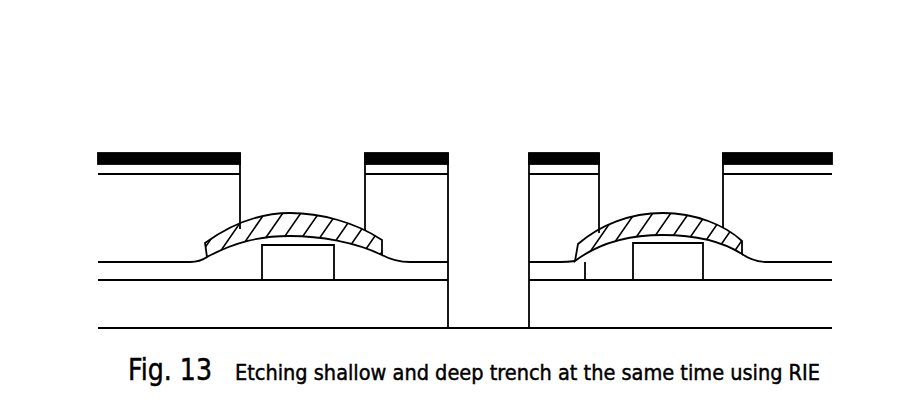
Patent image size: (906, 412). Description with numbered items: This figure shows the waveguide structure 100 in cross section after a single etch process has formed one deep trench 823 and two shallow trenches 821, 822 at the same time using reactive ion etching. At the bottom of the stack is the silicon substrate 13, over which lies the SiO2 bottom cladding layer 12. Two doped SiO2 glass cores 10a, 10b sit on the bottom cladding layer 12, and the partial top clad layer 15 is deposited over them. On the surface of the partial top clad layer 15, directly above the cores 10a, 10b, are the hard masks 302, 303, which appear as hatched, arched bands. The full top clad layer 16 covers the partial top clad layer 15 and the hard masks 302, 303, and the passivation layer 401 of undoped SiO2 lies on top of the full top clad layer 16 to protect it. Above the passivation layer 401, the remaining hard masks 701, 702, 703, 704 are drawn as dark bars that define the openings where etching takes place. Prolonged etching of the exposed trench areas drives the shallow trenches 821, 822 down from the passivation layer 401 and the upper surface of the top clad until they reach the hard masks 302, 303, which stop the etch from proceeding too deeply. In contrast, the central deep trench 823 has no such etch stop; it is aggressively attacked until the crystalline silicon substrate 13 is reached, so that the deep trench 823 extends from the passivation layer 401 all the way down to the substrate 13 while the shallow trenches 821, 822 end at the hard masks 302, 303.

The waveguide structure 100 is at (413, 78).
The silicon substrate 13 is at (100, 343).
The bottom cladding layer 12 is at (96, 306).
The partial top clad layer 15 is at (96, 270).
The full top clad layer 16 is at (96, 220).
The passivation layer 401 is at (101, 170).
The hard mask 701 is at (97, 153).
The hard mask 702 is at (411, 152).
The hard mask 703 is at (570, 152).
The hard mask 704 is at (770, 152).
The doped SiO2 glass core 10a is at (262, 268).
The doped SiO2 glass core 10b is at (633, 268).
The hard mask 302 is at (218, 235).
The hard mask 303 is at (585, 241).
The shallow trench 821 is at (298, 152).
The shallow trench 822 is at (660, 152).
The deep trench 823 is at (490, 158).